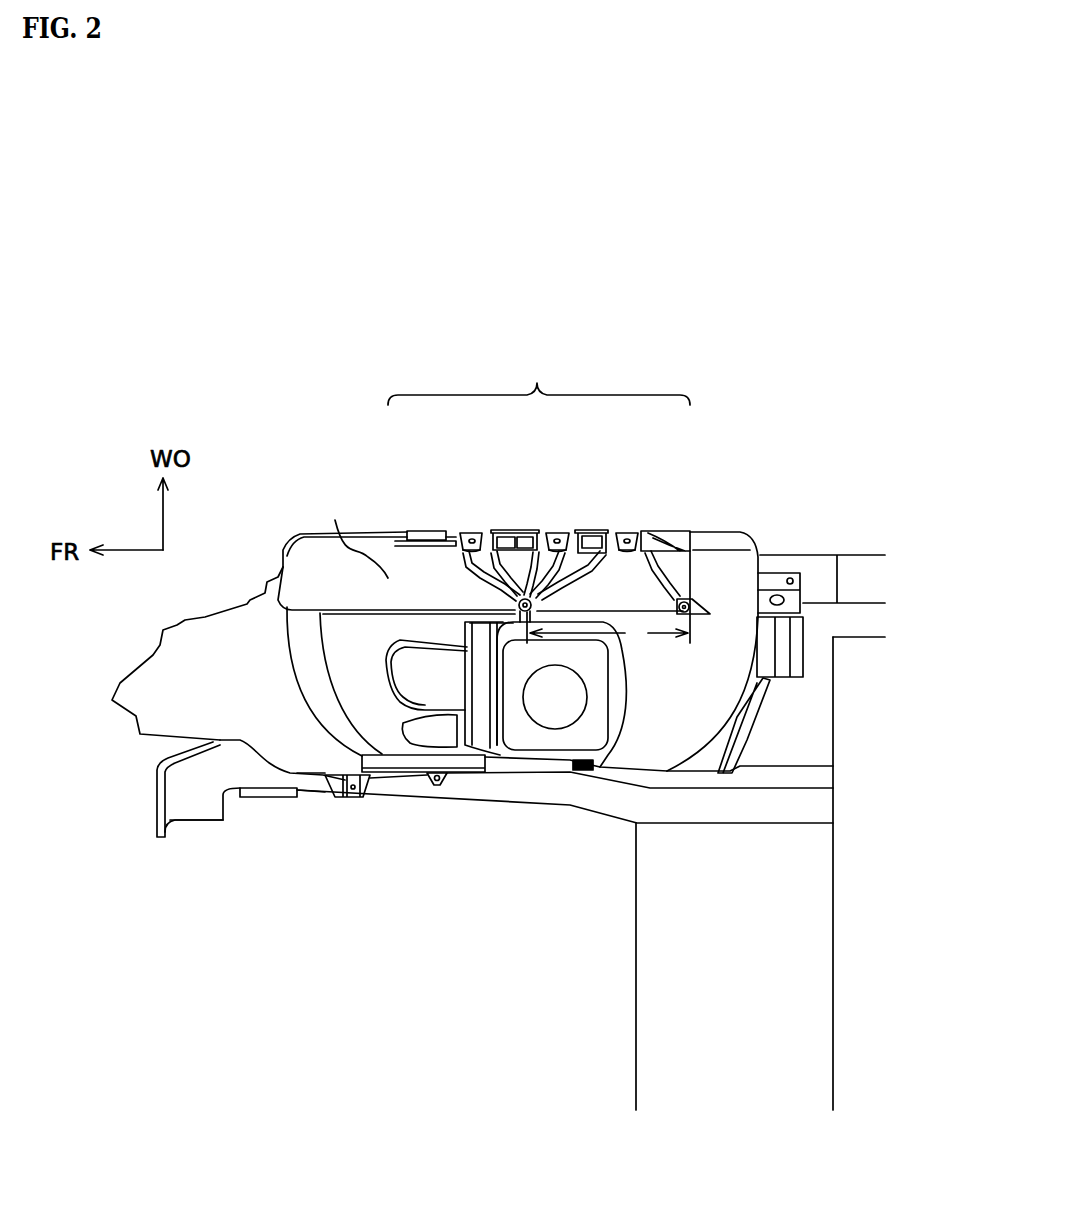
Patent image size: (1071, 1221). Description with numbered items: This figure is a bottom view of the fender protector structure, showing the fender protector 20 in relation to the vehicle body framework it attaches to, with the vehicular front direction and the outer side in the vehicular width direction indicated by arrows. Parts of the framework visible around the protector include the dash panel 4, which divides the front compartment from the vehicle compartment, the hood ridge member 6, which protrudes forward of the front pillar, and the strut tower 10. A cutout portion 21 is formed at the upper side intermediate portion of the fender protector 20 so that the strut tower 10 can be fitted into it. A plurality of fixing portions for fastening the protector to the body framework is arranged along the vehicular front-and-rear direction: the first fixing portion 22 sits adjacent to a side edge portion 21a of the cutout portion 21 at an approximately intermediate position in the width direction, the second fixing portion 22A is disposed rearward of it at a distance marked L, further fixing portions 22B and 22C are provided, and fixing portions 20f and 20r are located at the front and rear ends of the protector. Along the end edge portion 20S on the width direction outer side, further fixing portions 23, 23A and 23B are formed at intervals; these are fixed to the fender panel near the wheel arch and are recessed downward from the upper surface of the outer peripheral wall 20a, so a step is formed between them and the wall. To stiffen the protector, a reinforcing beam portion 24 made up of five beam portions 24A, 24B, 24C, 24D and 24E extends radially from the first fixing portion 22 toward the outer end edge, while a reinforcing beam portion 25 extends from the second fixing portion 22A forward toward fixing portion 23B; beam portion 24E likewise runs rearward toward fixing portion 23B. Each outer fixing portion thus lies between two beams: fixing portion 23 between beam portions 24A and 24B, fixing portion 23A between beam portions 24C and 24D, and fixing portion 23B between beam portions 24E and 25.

The dash panel 4 is at (643, 1012).
The hood ridge member 6 is at (210, 808).
The strut tower 10 is at (578, 753).
The fender protector 20 is at (308, 518).
The outer peripheral wall 20a is at (354, 537).
The fixing portion 20f is at (160, 665).
The fixing portion 20r is at (793, 600).
The end edge portion 20S is at (423, 531).
The cutout portion 21 is at (480, 693).
The side edge portion 21a is at (566, 630).
The first fixing portion 22 is at (467, 650).
The second fixing portion 22A is at (703, 613).
The fixing portion 22B is at (350, 788).
The fixing portion 22C is at (422, 788).
The fixing portion 23 is at (470, 531).
The fixing portion 23A is at (560, 531).
The fixing portion 23B is at (637, 531).
The reinforcing beam portion 24 is at (539, 379).
The reinforcing beam portion 24A is at (452, 530).
The reinforcing beam portion 24B is at (487, 530).
The reinforcing beam portion 24C is at (543, 530).
The reinforcing beam portion 24D is at (577, 530).
The reinforcing beam portion 24E is at (620, 530).
The reinforcing beam portion 25 is at (668, 531).